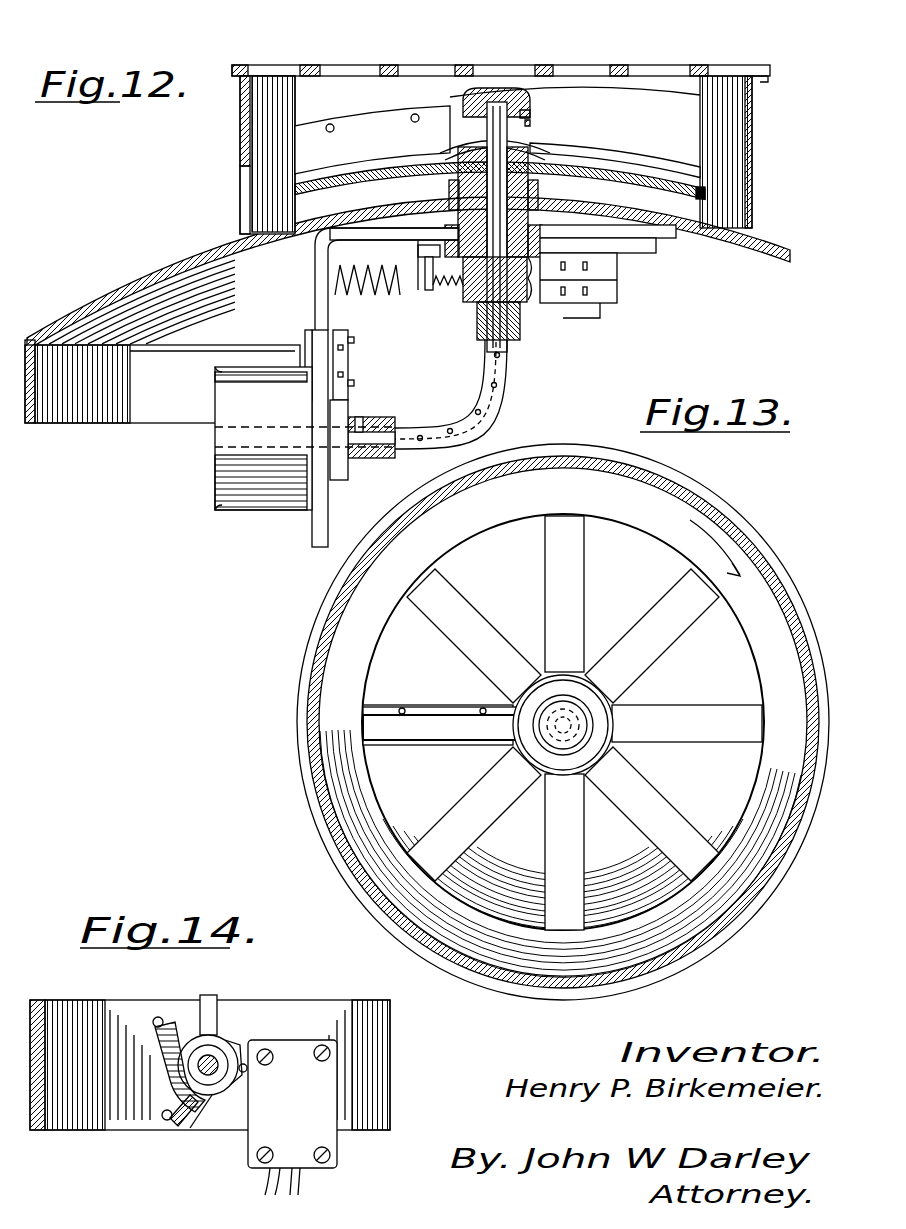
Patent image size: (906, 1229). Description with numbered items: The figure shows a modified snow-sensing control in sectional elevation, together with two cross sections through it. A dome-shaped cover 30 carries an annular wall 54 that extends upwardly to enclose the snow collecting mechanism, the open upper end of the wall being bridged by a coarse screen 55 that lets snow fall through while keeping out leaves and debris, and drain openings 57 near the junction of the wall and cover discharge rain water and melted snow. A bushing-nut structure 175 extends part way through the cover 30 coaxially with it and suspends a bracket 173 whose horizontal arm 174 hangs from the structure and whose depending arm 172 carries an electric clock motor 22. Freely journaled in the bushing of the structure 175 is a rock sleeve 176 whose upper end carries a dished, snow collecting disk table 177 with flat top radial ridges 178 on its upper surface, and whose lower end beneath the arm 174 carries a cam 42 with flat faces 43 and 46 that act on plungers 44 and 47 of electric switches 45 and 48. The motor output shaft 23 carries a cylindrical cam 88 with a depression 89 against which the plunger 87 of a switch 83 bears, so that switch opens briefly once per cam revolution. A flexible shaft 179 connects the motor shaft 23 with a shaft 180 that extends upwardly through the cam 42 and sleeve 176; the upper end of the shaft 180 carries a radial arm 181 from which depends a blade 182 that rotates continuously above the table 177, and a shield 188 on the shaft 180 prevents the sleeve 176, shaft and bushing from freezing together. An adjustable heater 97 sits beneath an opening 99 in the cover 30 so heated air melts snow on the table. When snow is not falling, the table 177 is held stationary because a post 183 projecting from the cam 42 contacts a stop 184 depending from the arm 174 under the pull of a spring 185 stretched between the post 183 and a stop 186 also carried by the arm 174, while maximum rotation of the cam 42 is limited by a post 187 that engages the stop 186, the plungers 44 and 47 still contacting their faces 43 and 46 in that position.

In FIG. 12, the electric clock motor 22 is at (232, 392).
In FIG. 12, the output shaft 23 is at (238, 452).
In FIG. 12, the dome-shaped cover 30 is at (168, 268).
In FIG. 13, the dome-shaped cover 30 is at (800, 702).
In FIG. 12, the cam 42 is at (482, 330).
In FIG. 14, the cam 42 is at (210, 1098).
In FIG. 14, the cam face 43 is at (243, 1062).
In FIG. 12, the plunger 44 is at (548, 232).
In FIG. 12, the electric switch 45 is at (610, 271).
In FIG. 14, the cam face 46 is at (232, 1040).
In FIG. 12, the plunger 47 is at (532, 303).
In FIG. 14, the plunger 47 is at (240, 1078).
In FIG. 12, the electric switch 48 is at (601, 320).
In FIG. 14, the electric switch 48 is at (300, 1124).
In FIG. 12, the annular wall 54 is at (238, 138).
In FIG. 13, the annular wall 54 is at (735, 515).
In FIG. 12, the screen 55 is at (280, 63).
In FIG. 12, the drain openings 57 is at (245, 186).
In FIG. 12, the switch 83 is at (352, 342).
In FIG. 12, the plunger 87 is at (354, 385).
In FIG. 12, the cylindrical cam 88 is at (340, 478).
In FIG. 12, the depression 89 is at (345, 405).
In FIG. 12, the adjustable heater 97 is at (367, 291).
In FIG. 12, the opening 99 is at (370, 205).
In FIG. 12, the depending arm 172 is at (320, 547).
In FIG. 12, the bracket 173 is at (293, 275).
In FIG. 12, the horizontal arm 174 is at (314, 250).
In FIG. 14, the horizontal arm 174 is at (380, 1036).
In FIG. 12, the bushing-nut structure 175 is at (600, 175).
In FIG. 12, the rock sleeve 176 is at (560, 137).
In FIG. 12, the disk table 177 is at (715, 197).
In FIG. 13, the disk table 177 is at (612, 522).
In FIG. 12, the radial ridges 178 is at (672, 178).
In FIG. 13, the radial ridges 178 is at (588, 580).
In FIG. 12, the flexible shaft 179 is at (478, 411).
In FIG. 12, the shaft 180 is at (515, 180).
In FIG. 13, the shaft 180 is at (590, 735).
In FIG. 14, the shaft 180 is at (210, 1062).
In FIG. 12, the radial arm 181 is at (400, 108).
In FIG. 13, the radial arm 181 is at (440, 715).
In FIG. 12, the blade 182 is at (372, 140).
In FIG. 12, the post 183 is at (474, 300).
In FIG. 14, the post 183 is at (172, 1130).
In FIG. 12, the stop 184 is at (418, 249).
In FIG. 14, the stop 184 is at (162, 1112).
In FIG. 12, the spring 185 is at (445, 288).
In FIG. 14, the spring 185 is at (158, 1060).
In FIG. 14, the stop 186 is at (155, 1017).
In FIG. 14, the post 187 is at (208, 995).
In FIG. 12, the shield 188 is at (528, 112).
In FIG. 13, the shield 188 is at (600, 715).